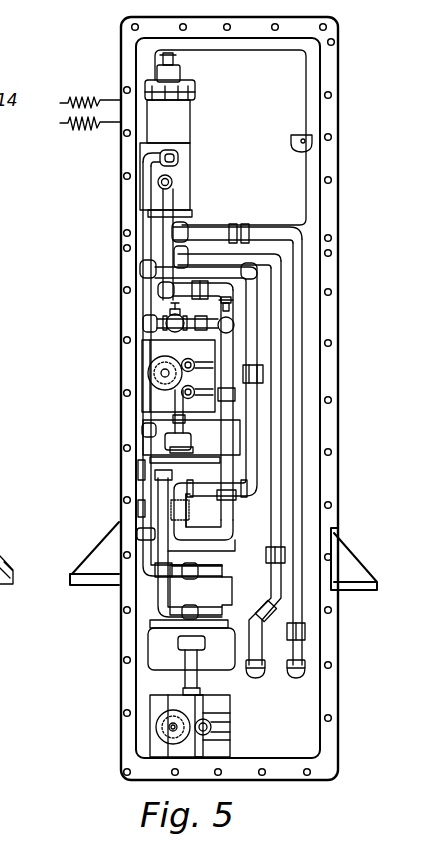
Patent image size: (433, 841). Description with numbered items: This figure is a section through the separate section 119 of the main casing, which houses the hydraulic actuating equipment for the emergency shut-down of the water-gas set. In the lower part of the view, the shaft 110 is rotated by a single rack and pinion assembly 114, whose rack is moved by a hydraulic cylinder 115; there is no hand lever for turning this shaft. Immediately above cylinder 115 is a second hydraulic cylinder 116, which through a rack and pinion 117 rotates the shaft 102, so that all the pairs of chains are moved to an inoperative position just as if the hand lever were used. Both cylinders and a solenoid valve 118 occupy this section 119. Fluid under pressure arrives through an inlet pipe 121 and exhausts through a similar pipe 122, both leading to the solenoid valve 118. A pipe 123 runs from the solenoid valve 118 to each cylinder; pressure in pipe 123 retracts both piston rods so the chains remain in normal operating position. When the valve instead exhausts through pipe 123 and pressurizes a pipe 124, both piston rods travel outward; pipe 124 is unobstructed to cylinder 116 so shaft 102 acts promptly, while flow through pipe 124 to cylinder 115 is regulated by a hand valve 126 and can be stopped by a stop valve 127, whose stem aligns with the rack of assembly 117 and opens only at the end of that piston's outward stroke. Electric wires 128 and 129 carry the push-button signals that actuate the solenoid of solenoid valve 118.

The shaft 102 is at (148, 372).
The shaft 110 is at (157, 728).
The rack and pinion assembly 114 is at (202, 710).
The hydraulic cylinder 115 is at (208, 585).
The hydraulic cylinder 116 is at (200, 508).
The rack and pinion 117 is at (186, 403).
The solenoid valve 118 is at (184, 149).
The separate section 119 is at (330, 65).
The inlet pipe 121 is at (282, 326).
The exhaust pipe 122 is at (302, 362).
The pipe 123 is at (158, 284).
The pressure pipe 124 is at (200, 325).
The hand valve 126 is at (195, 291).
The stop valve 127 is at (217, 306).
The electric wire 128 is at (100, 97).
The electric wire 129 is at (100, 131).